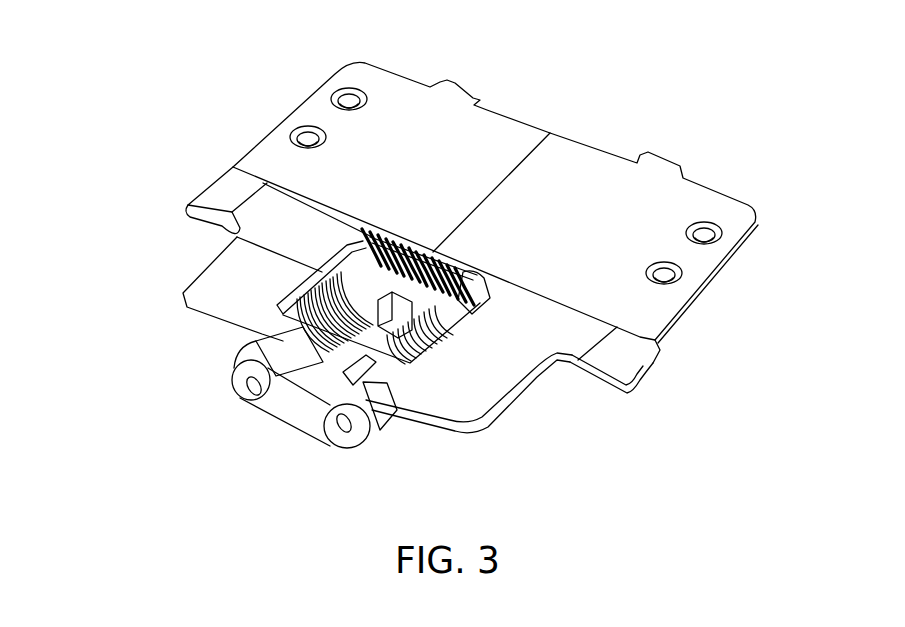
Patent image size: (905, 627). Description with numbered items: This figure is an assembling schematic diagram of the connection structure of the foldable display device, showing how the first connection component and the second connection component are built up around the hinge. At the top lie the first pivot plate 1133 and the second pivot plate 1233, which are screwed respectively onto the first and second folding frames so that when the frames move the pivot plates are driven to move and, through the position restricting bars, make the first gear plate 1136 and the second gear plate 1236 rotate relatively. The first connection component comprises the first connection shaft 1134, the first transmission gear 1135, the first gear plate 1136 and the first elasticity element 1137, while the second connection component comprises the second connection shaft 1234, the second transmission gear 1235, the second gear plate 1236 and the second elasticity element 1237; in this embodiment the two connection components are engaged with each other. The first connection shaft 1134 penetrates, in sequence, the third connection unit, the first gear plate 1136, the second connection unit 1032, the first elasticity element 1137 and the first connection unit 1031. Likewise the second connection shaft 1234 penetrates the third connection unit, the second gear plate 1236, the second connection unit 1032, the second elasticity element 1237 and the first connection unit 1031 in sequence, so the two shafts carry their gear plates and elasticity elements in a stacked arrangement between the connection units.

The first pivot plate 1133 is at (313, 120).
The first transmission gear 1135 is at (332, 207).
The second connection unit 1032 is at (380, 230).
The first elasticity element 1137 is at (313, 265).
The first gear plate 1136 is at (222, 284).
The first connection unit 1031 is at (250, 357).
The first connection shaft 1134 is at (237, 373).
The second connection shaft 1234 is at (393, 428).
The second gear plate 1236 is at (500, 370).
The second elasticity element 1237 is at (463, 311).
The second transmission gear 1235 is at (475, 252).
The second pivot plate 1233 is at (725, 217).